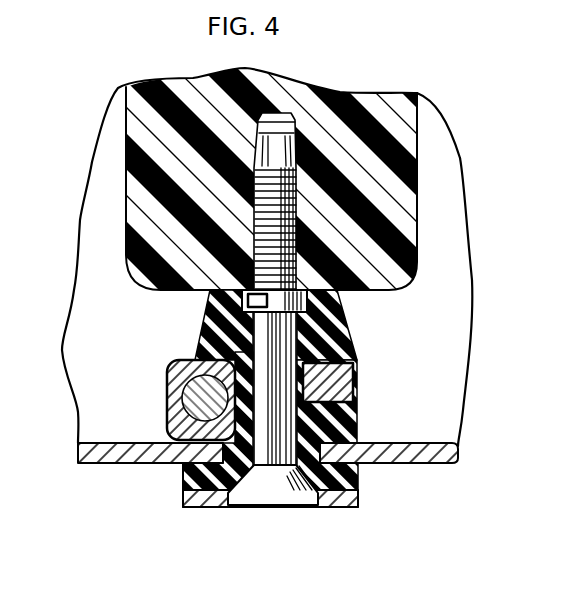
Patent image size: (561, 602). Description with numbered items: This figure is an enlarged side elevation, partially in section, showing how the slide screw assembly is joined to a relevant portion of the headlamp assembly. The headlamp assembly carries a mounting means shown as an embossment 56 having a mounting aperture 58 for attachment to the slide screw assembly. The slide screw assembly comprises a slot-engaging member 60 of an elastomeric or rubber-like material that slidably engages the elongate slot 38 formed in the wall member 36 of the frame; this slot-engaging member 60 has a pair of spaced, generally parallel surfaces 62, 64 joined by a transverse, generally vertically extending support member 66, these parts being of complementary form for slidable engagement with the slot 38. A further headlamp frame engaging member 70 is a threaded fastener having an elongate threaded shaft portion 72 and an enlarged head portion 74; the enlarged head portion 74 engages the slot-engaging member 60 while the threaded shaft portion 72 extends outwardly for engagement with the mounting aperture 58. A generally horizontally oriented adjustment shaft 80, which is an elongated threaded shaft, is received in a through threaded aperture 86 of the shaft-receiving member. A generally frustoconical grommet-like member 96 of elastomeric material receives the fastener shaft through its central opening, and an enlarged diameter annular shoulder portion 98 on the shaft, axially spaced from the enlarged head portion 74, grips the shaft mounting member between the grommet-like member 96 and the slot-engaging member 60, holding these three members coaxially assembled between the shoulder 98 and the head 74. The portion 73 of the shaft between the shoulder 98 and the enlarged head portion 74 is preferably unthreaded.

The wall member 36 is at (88, 457).
The elongate slot 38 is at (185, 474).
The embossment 56 is at (412, 140).
The mounting aperture 58 is at (287, 116).
The slot-engaging member 60 is at (180, 488).
The spaced parallel surface 62 is at (335, 455).
The spaced parallel surface 64 is at (363, 465).
The support member 66 is at (187, 440).
The headlamp frame engaging member 70 is at (248, 298).
The threaded shaft portion 72 is at (253, 170).
The unthreaded shaft portion 73 is at (262, 322).
The enlarged head portion 74 is at (261, 493).
The adjustment shaft 80 is at (172, 384).
The threaded aperture 86 is at (186, 399).
The grommet-like member 96 is at (346, 338).
The annular shoulder portion 98 is at (338, 294).